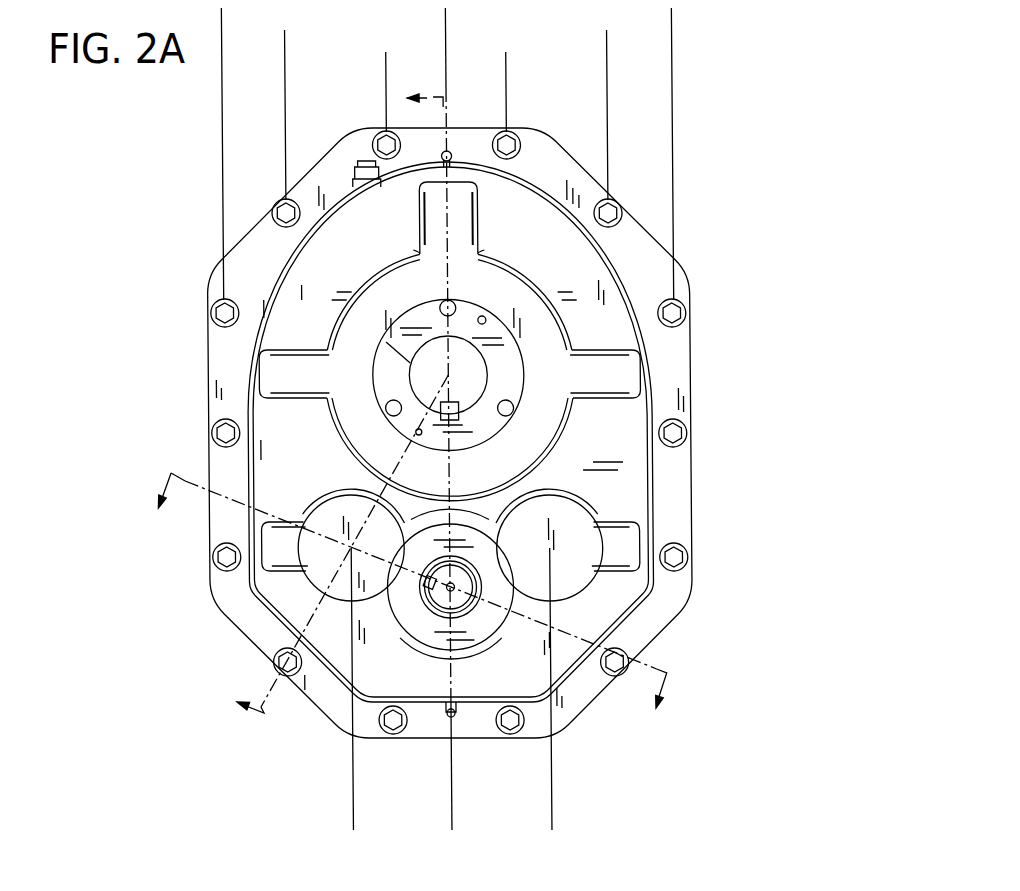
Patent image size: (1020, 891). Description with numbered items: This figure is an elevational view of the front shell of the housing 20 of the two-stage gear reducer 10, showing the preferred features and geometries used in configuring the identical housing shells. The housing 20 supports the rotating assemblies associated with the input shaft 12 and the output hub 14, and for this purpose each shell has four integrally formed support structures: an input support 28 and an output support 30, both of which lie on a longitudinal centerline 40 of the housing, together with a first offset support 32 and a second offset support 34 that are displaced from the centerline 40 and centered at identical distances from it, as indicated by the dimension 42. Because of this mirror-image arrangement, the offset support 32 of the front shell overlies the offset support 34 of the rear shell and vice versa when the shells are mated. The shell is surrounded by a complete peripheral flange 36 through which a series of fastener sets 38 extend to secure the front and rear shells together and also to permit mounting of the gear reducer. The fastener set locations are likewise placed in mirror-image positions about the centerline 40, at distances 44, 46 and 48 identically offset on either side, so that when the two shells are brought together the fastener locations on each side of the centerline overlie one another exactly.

The two-stage gear reducer 10 is at (705, 236).
The input shaft 12 is at (442, 605).
The output hub 14 is at (398, 366).
The housing 20 is at (276, 337).
The input support 28 is at (398, 607).
The output support 30 is at (342, 345).
The first offset support 32 is at (355, 508).
The second offset support 34 is at (553, 505).
The peripheral flange 36 is at (220, 368).
The fastener sets 38 is at (278, 212).
The longitudinal centerline 40 is at (452, 822).
The offset distance 42 is at (602, 817).
The fastener location distance 44 is at (549, 59).
The fastener location distance 46 is at (607, 38).
The fastener location distance 48 is at (672, 16).